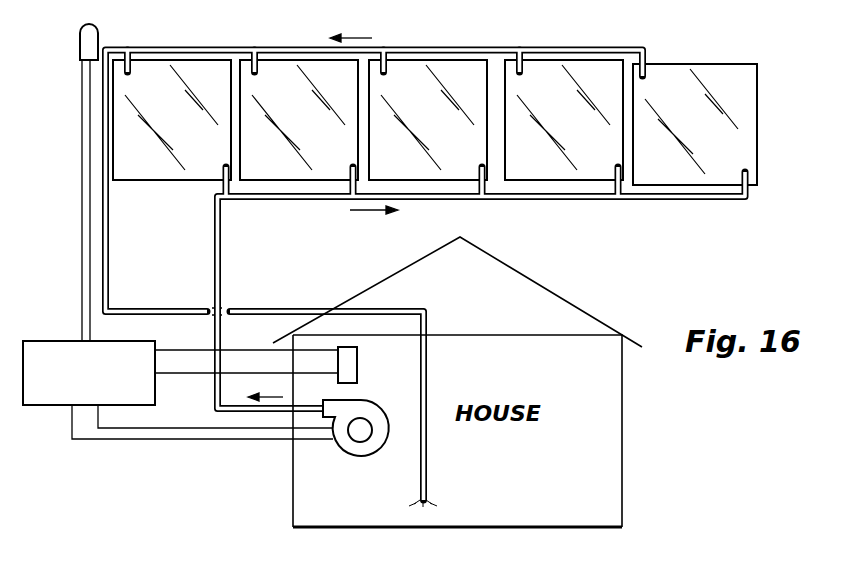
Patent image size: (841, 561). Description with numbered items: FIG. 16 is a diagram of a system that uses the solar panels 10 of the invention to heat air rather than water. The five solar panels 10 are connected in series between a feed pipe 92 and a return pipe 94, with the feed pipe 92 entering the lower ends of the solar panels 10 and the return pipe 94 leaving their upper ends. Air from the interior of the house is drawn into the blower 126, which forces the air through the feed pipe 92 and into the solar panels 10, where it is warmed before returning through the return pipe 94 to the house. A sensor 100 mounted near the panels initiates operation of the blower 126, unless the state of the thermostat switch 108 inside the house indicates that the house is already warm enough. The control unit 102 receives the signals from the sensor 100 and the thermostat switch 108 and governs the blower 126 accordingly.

The solar panel 10 is at (435, 122).
The feed pipe 92 is at (221, 237).
The return pipe 94 is at (110, 232).
The sensor 100 is at (80, 48).
The control unit 102 is at (45, 347).
The thermostat switch 108 is at (357, 366).
The blower 126 is at (362, 457).